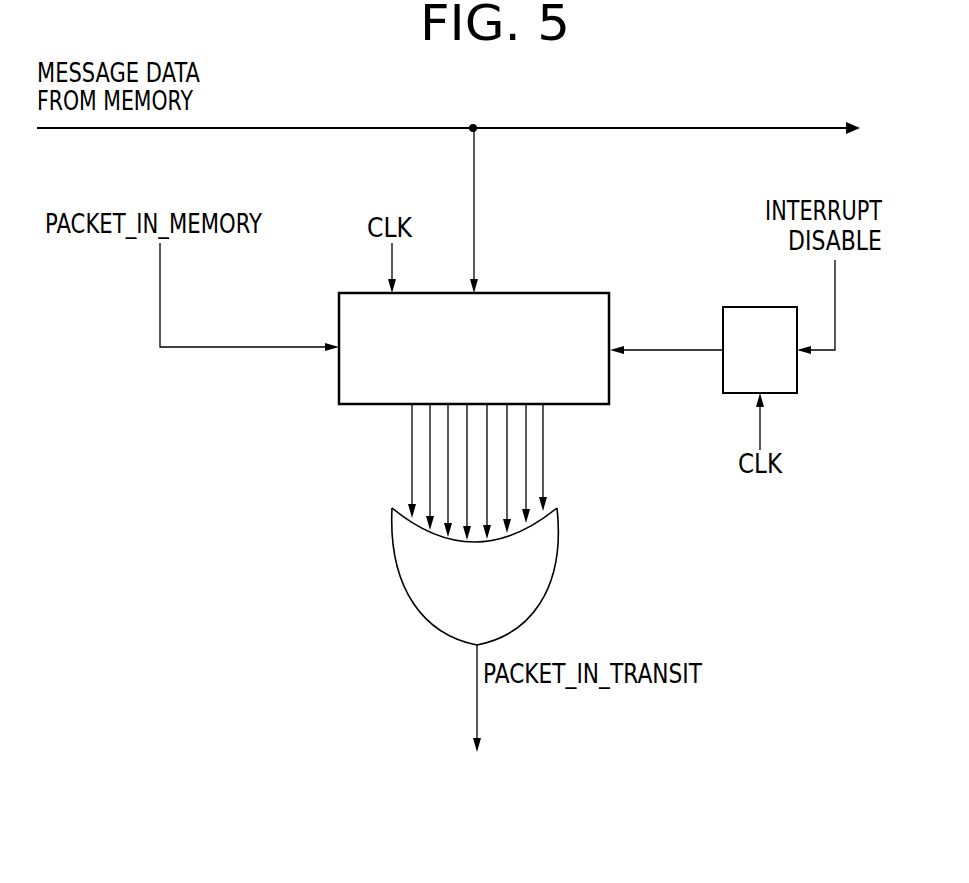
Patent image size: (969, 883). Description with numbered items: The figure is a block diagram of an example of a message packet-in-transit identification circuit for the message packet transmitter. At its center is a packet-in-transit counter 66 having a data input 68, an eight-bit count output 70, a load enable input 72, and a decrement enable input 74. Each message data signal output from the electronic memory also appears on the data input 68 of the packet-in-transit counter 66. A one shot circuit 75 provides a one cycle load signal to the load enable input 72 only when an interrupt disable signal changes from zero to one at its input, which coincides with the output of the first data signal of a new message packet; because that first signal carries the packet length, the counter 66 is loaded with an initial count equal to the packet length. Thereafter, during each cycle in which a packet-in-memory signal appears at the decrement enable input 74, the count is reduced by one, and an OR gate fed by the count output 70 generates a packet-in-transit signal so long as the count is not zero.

The packet-in-transit counter 66 is at (558, 298).
The data input 68 is at (476, 263).
The 8-bit count output 70 is at (565, 407).
The load enable input 72 is at (671, 348).
The decrement enable input 74 is at (304, 346).
The one shot circuit 75 is at (745, 307).